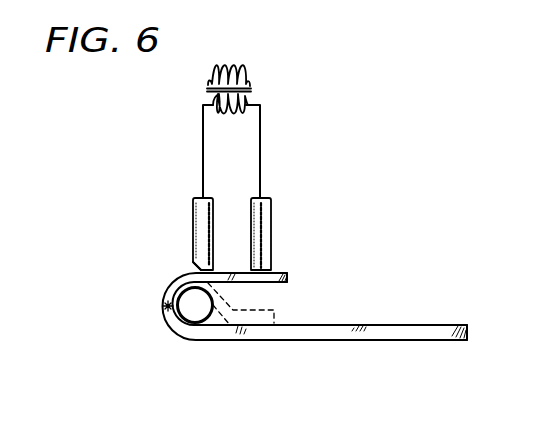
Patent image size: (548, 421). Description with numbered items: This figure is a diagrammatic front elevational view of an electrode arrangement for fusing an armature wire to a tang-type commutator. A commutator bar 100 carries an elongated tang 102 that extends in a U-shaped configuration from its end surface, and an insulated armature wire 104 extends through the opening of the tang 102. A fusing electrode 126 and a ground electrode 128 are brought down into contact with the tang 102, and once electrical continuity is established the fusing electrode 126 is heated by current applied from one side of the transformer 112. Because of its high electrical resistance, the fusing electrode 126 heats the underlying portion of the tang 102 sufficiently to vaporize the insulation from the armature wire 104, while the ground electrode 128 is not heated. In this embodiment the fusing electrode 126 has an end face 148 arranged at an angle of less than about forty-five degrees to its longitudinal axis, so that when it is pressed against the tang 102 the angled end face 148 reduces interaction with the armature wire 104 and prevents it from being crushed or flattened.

The commutator bar 100 is at (420, 326).
The tang 102 is at (288, 280).
The armature wire 104 is at (188, 310).
The transformer 112 is at (251, 89).
The fusing electrode 126 is at (198, 232).
The ground electrode 128 is at (262, 234).
The end face 148 is at (198, 265).